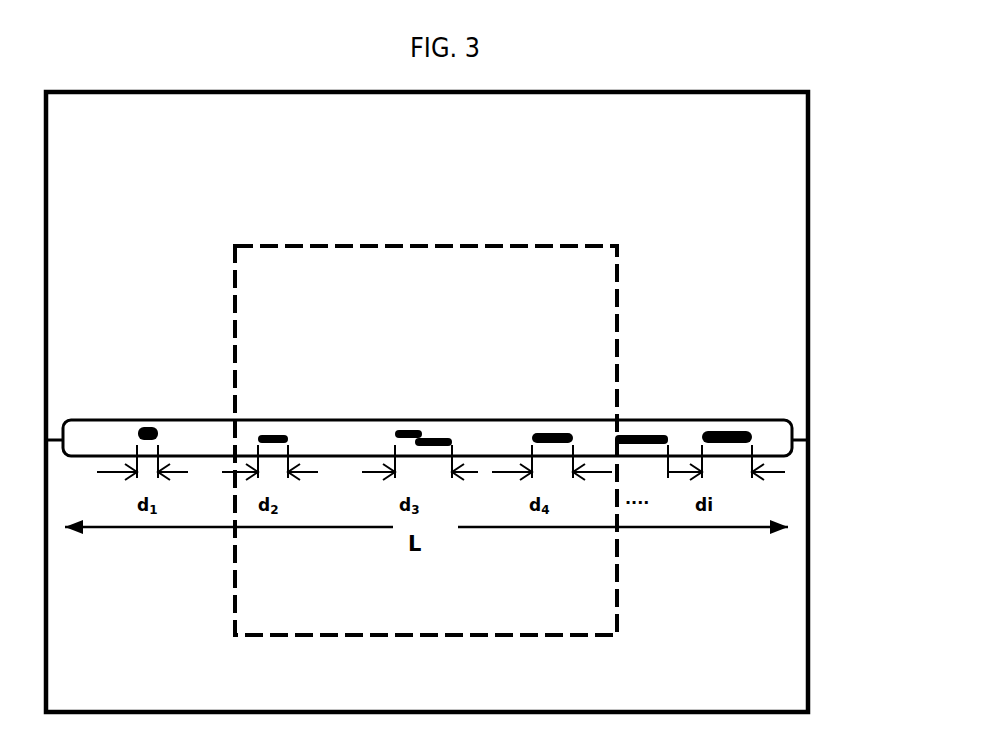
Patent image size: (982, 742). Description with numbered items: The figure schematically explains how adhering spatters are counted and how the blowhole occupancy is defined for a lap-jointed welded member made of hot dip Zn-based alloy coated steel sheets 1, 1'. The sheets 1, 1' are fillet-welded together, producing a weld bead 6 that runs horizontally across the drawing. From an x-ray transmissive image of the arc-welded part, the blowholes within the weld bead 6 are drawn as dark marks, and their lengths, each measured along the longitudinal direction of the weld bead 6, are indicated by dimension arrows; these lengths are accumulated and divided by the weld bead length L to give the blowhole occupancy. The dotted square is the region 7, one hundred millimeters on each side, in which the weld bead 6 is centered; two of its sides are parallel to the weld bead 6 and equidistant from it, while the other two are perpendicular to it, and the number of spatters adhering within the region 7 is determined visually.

The hot dip Zn-based alloy coated steel sheet 1 is at (468, 402).
The hot dip Zn-based alloy coated steel sheet 1' is at (834, 504).
The weld bead 6 is at (773, 435).
The region in which the number of spatters is determined 7 is at (563, 257).